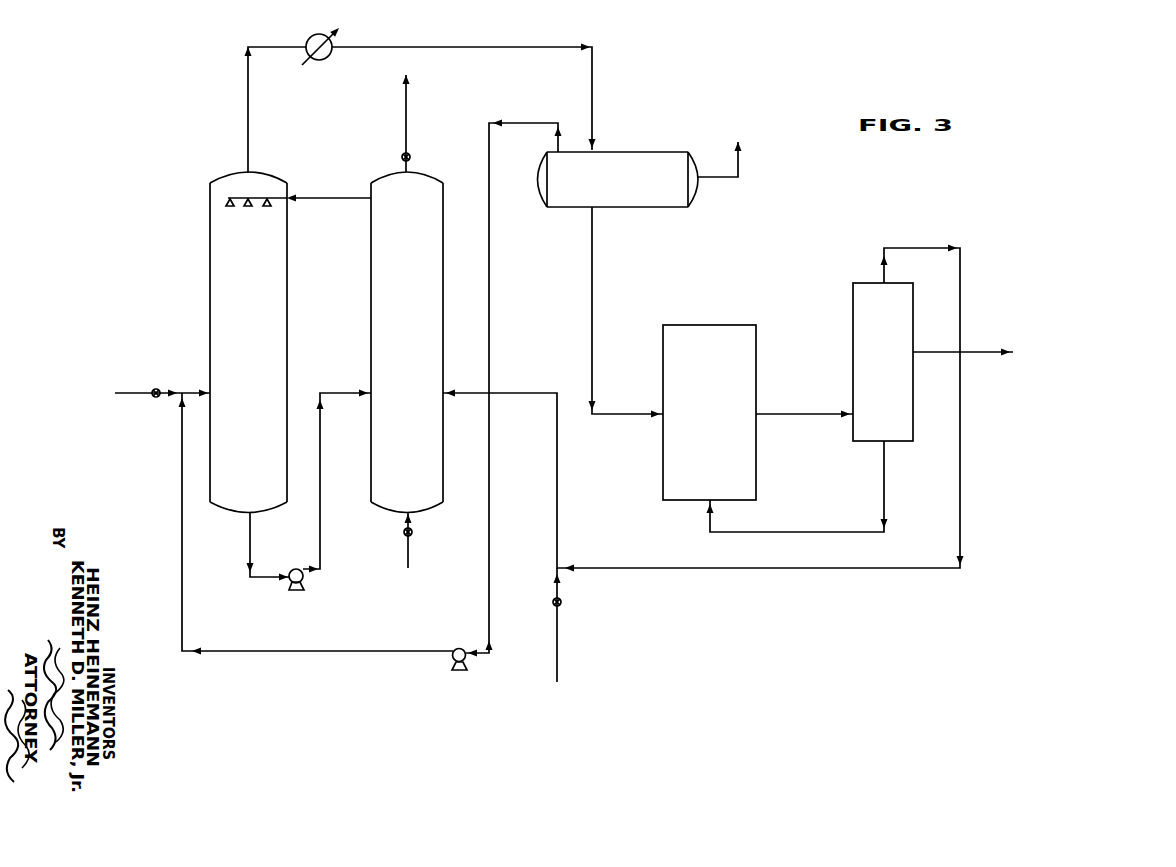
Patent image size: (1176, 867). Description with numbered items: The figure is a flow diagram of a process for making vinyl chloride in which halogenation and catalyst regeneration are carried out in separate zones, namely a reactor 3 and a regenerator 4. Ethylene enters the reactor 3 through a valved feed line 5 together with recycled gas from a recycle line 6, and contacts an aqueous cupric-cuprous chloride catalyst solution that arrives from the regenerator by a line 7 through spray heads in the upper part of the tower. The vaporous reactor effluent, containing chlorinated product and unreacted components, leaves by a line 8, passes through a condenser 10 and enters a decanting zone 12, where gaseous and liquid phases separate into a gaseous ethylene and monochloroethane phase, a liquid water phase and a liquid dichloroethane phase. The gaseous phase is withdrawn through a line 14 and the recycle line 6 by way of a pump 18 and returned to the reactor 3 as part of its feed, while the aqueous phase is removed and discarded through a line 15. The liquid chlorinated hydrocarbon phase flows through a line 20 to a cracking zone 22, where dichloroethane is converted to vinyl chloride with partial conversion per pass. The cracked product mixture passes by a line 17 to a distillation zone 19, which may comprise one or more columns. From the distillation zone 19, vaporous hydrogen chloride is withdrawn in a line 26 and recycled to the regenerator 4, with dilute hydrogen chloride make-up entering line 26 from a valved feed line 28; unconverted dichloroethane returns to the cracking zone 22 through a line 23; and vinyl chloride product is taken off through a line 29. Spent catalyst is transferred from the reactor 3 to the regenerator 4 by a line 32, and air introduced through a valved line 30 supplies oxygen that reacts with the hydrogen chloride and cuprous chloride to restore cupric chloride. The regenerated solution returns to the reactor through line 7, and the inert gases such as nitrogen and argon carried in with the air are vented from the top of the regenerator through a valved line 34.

The reactor 3 is at (205, 279).
The regenerator 4 is at (379, 169).
The valved feed line 5 is at (136, 393).
The recycle line 6 is at (312, 652).
The line 7 is at (326, 199).
The line 8 is at (247, 102).
The condenser 10 is at (308, 38).
The decanting zone 12 is at (660, 145).
The line 14 is at (532, 122).
The line 15 is at (727, 178).
The line 17 is at (804, 416).
The pump 18 is at (468, 673).
The distillation zone 19 is at (847, 309).
The line 20 is at (592, 313).
The cracking zone 22 is at (689, 319).
The line 23 is at (811, 533).
The line 26 is at (961, 262).
The valved feed line 28 is at (558, 627).
The line 29 is at (990, 353).
The valved line 30 is at (409, 544).
The line 32 is at (320, 538).
The valved line 34 is at (406, 93).